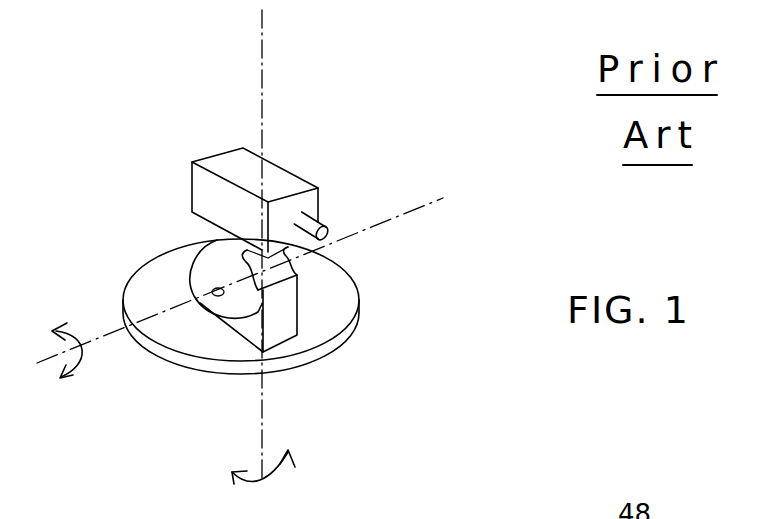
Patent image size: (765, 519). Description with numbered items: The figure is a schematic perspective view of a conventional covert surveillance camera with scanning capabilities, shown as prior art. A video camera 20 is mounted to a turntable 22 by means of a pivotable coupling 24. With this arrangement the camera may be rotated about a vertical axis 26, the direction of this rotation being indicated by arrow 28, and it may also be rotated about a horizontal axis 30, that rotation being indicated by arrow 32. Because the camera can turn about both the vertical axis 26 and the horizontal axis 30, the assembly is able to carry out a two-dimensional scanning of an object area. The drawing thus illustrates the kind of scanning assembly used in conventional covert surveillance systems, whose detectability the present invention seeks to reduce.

The video camera 20 is at (282, 178).
The turntable 22 is at (335, 302).
The pivotable coupling 24 is at (212, 292).
The vertical axis 26 is at (262, 67).
The arrow 28 is at (275, 485).
The horizontal axis 30 is at (418, 208).
The arrow 32 is at (80, 358).